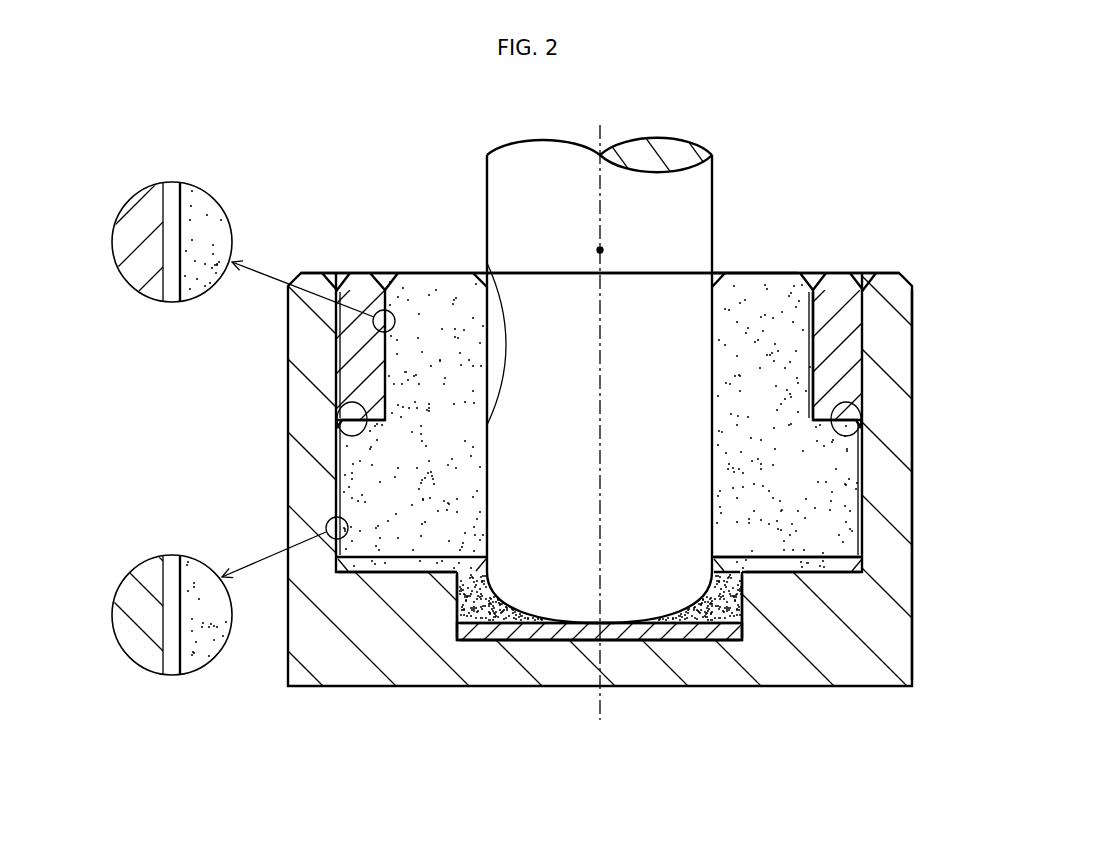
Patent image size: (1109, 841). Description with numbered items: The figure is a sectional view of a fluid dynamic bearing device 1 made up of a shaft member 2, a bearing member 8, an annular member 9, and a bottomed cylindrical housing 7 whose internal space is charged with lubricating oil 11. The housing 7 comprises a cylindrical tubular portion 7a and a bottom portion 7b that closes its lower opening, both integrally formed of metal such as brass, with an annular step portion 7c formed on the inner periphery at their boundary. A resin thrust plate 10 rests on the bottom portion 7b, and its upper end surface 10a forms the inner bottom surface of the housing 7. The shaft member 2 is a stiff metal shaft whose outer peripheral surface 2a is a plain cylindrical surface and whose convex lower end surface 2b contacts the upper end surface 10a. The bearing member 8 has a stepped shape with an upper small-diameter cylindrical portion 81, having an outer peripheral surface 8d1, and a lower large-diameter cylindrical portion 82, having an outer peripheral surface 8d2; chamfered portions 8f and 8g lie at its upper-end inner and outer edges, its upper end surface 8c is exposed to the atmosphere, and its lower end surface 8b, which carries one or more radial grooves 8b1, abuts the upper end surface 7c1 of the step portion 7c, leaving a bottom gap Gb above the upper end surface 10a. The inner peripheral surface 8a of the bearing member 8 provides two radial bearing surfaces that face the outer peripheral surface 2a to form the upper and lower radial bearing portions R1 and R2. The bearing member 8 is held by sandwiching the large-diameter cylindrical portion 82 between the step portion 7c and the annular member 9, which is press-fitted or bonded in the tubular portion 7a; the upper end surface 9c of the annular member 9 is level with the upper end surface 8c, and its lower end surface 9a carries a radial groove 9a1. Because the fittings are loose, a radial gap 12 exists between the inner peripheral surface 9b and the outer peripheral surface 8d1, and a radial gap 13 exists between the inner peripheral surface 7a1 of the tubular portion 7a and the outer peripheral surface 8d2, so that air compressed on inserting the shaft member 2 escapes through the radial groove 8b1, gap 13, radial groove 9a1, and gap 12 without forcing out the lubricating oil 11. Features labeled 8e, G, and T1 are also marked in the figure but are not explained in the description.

The fluid dynamic bearing device 1 is at (892, 195).
The shaft member 2 is at (722, 188).
The outer peripheral surface 2a is at (487, 183).
The lower end surface 2b is at (678, 613).
The housing 7 is at (922, 300).
The tubular portion 7a is at (895, 496).
The inner peripheral surface 7a1 is at (862, 470).
The bottom portion 7b is at (632, 665).
The step portion 7c is at (357, 622).
The upper end surface 7c1 is at (845, 560).
The bearing member 8 is at (783, 338).
The inner peripheral surface 8a is at (487, 263).
The lower end surface 8b is at (802, 570).
The radial groove 8b1 is at (407, 560).
The upper end surface 8c is at (775, 272).
The outer peripheral surface 8d1 is at (815, 372).
The outer peripheral surface 8d2 is at (862, 525).
The elastic body protrusion 8e is at (358, 410).
The chamfered portion 8f is at (715, 272).
The chamfered portion 8g is at (388, 273).
The annular member 9 is at (838, 298).
The lower end surface 9a is at (347, 437).
The radial groove 9a1 is at (835, 422).
The inner peripheral surface 9b is at (812, 345).
The upper end surface 9c is at (358, 273).
The thrust plate 10 is at (517, 630).
The upper end surface 10a is at (473, 623).
The lubricating oil 11 is at (732, 605).
The radial gap 12 is at (167, 268).
The radial gap 13 is at (168, 642).
The small-diameter cylindrical portion 81 is at (430, 388).
The large-diameter cylindrical portion 82 is at (370, 505).
The center of gravity G is at (600, 250).
The bottom gap Gb is at (707, 640).
The radial bearing portion R1 is at (487, 372).
The radial bearing portion R2 is at (487, 485).
The contact thickness T1 is at (587, 633).